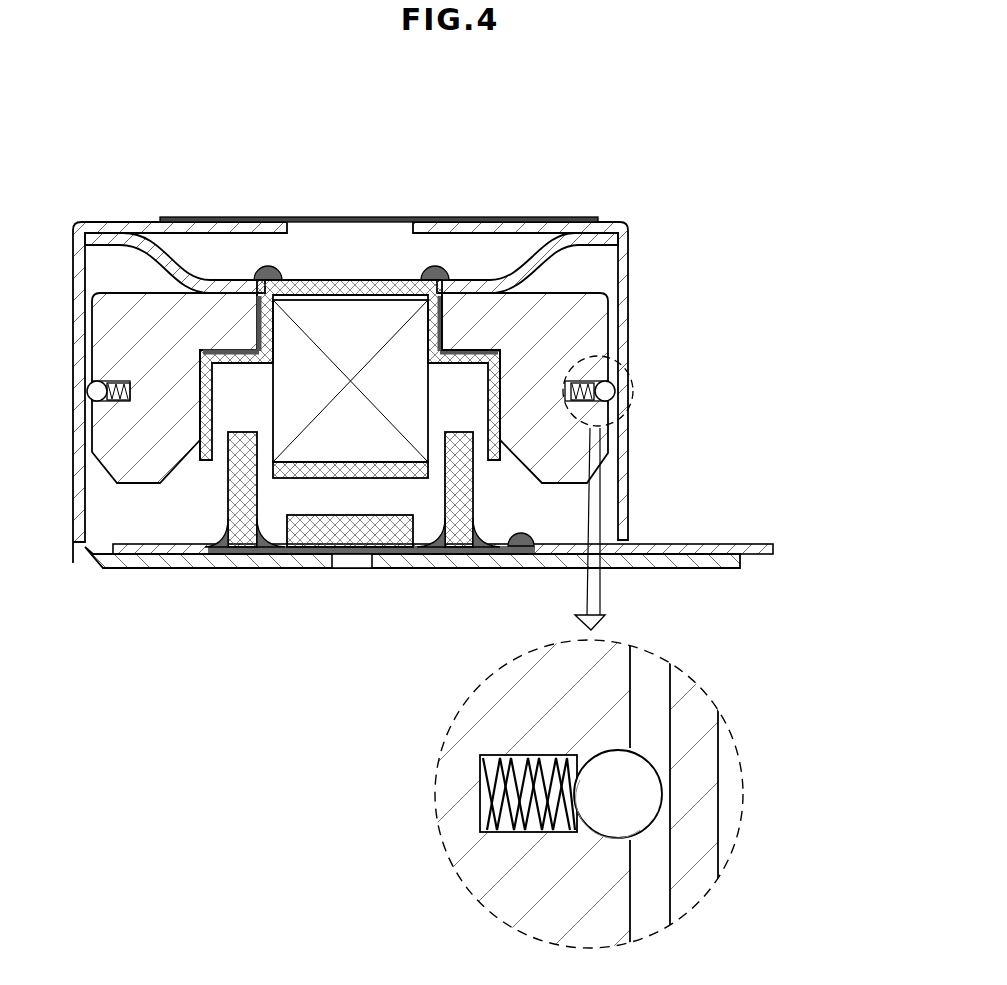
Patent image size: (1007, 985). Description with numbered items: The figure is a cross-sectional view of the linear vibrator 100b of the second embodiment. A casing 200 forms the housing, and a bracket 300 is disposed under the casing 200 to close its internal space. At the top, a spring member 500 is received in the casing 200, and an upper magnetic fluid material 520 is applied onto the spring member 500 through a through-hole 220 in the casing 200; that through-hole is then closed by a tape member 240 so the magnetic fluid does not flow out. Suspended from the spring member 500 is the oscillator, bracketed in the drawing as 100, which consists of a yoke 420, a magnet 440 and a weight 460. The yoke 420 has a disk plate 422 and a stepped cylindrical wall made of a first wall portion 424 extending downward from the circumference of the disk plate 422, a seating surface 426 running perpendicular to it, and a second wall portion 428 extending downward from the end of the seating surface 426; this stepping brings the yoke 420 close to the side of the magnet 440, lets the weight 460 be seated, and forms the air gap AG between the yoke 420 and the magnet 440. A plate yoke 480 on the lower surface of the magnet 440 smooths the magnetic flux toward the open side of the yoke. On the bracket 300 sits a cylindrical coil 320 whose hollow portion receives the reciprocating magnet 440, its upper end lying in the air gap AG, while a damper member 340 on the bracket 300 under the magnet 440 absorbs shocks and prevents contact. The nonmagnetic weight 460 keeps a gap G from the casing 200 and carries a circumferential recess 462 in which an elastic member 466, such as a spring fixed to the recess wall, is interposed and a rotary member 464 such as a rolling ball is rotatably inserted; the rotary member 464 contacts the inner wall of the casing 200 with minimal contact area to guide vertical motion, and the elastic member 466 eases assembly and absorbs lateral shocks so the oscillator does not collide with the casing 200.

The linear vibrator 100b is at (125, 102).
The lens driving assembly 100 is at (533, 370).
The casing 200 is at (592, 232).
The through-hole 220 is at (316, 232).
The tape member 240 is at (388, 222).
The bracket 300 is at (513, 561).
The coil 320 is at (245, 527).
The damper member 340 is at (323, 537).
The yoke 420 is at (498, 358).
The disk plate 422 is at (410, 298).
The first wall portion 424 is at (437, 325).
The seating surface 426 is at (470, 358).
The second wall portion 428 is at (490, 386).
The magnet 440 is at (428, 408).
The weight 460 is at (582, 462).
The circumferential recess 462 is at (622, 833).
The rotary member 464 is at (643, 783).
The elastic member 466 is at (480, 793).
The plate yoke 480 is at (392, 474).
The spring member 500 is at (170, 268).
The upper magnetic fluid material 520 is at (258, 264).